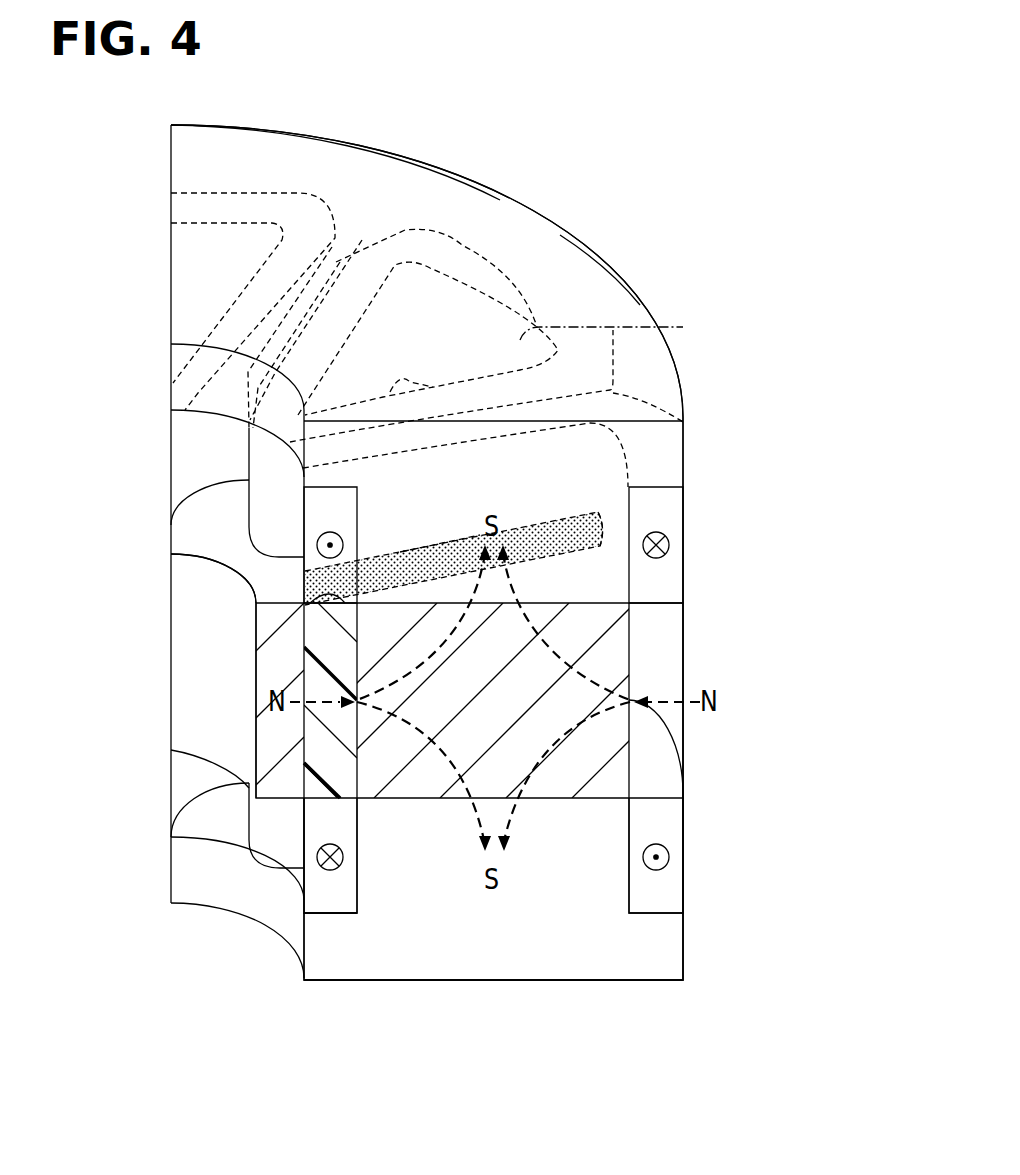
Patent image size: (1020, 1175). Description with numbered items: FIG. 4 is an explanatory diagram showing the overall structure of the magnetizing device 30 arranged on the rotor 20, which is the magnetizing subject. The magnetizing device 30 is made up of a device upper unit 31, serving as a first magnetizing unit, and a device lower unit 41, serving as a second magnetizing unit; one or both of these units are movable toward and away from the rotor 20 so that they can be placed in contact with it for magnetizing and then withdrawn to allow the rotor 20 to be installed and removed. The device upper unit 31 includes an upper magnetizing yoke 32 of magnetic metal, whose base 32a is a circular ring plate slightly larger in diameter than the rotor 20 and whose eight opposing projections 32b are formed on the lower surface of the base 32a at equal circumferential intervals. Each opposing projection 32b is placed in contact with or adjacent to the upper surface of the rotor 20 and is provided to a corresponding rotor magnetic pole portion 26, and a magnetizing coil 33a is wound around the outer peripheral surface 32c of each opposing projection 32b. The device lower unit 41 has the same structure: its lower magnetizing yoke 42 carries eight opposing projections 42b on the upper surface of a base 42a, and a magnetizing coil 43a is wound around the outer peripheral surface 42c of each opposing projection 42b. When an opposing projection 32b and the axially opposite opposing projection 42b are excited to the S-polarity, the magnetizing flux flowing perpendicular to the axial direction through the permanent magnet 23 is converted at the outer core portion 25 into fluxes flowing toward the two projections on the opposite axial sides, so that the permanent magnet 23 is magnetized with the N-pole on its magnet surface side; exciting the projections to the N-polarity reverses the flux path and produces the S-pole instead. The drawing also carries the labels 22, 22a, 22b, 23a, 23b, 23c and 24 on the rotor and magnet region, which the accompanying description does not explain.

The rotor 20 is at (634, 657).
The rotor core 22 is at (193, 553).
The outer peripheral surface of rotor core 22a is at (632, 762).
The inner portion of rotor core 22b is at (176, 665).
The permanent magnet 23 is at (545, 525).
The first end of flux barrier 23a is at (447, 545).
The second end of flux barrier 23b is at (305, 596).
The third end of flux barrier 23c is at (598, 520).
The magnet insertion hole 24 is at (303, 620).
The outer core portion 25 is at (540, 603).
The rotor magnetic pole portion 26 is at (378, 798).
The magnetizing device 30 is at (532, 106).
The device upper unit 31 is at (609, 268).
The upper magnetizing yoke 32 is at (479, 184).
The base 32a is at (404, 160).
The opposing projection 32b is at (187, 277).
The outer peripheral surface 32c is at (360, 516).
The magnetizing coil 33a is at (183, 193).
The device lower unit 41 is at (688, 945).
The lower magnetizing yoke 42 is at (601, 982).
The base 42a is at (487, 982).
The opposing projection 42b is at (615, 798).
The outer peripheral surface 42c is at (356, 873).
The magnetizing coil 43a is at (686, 848).